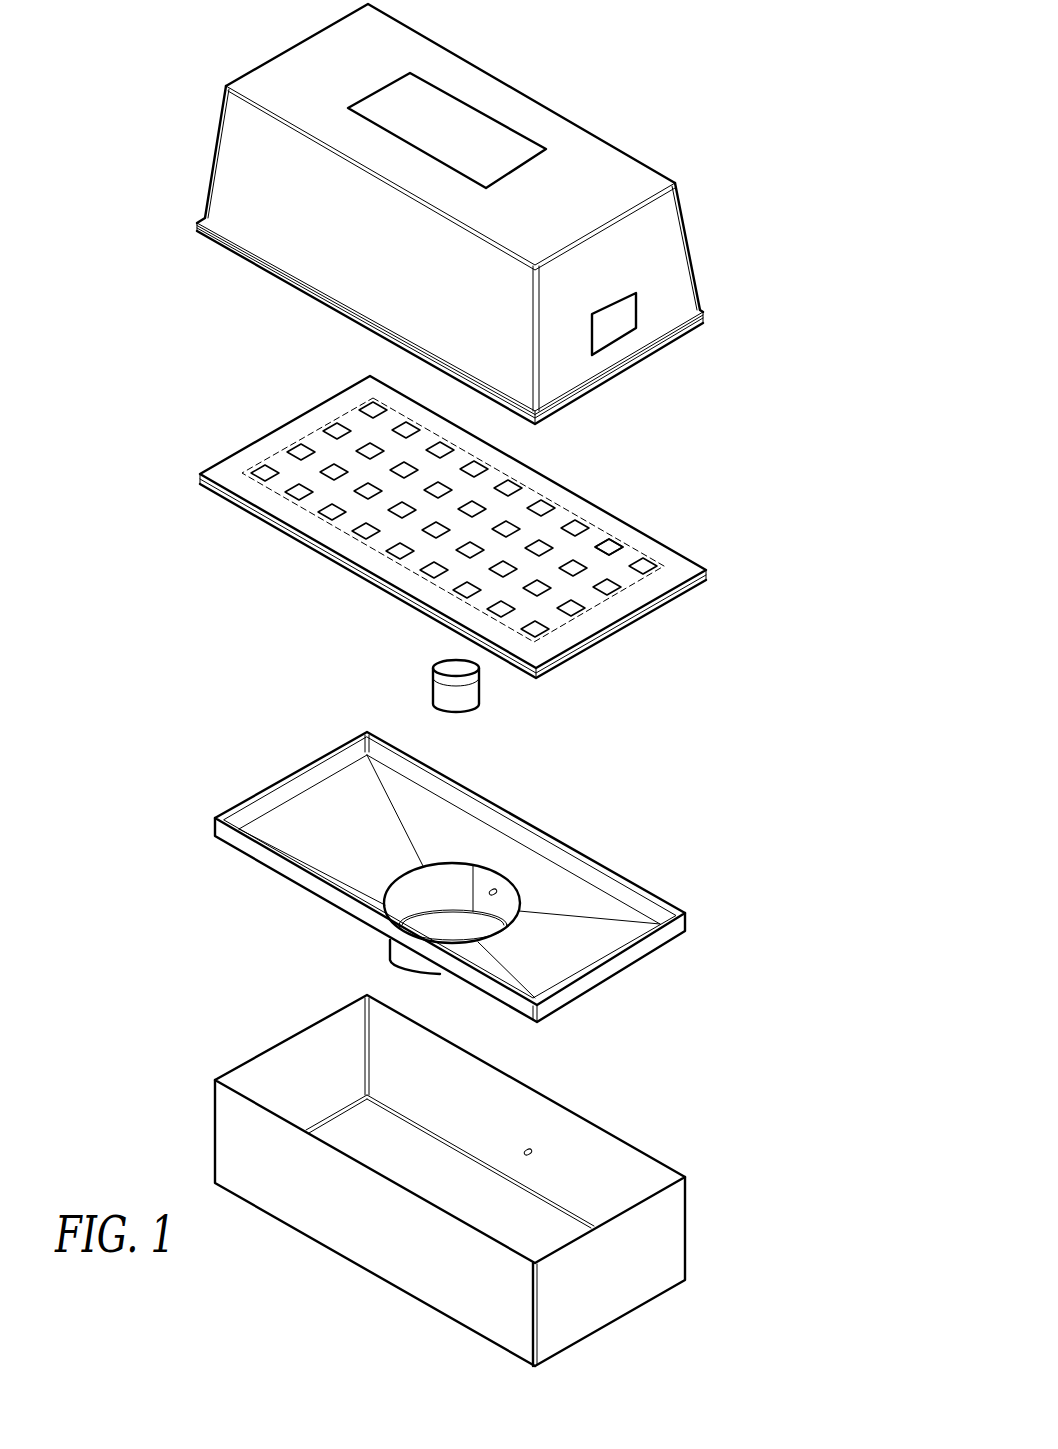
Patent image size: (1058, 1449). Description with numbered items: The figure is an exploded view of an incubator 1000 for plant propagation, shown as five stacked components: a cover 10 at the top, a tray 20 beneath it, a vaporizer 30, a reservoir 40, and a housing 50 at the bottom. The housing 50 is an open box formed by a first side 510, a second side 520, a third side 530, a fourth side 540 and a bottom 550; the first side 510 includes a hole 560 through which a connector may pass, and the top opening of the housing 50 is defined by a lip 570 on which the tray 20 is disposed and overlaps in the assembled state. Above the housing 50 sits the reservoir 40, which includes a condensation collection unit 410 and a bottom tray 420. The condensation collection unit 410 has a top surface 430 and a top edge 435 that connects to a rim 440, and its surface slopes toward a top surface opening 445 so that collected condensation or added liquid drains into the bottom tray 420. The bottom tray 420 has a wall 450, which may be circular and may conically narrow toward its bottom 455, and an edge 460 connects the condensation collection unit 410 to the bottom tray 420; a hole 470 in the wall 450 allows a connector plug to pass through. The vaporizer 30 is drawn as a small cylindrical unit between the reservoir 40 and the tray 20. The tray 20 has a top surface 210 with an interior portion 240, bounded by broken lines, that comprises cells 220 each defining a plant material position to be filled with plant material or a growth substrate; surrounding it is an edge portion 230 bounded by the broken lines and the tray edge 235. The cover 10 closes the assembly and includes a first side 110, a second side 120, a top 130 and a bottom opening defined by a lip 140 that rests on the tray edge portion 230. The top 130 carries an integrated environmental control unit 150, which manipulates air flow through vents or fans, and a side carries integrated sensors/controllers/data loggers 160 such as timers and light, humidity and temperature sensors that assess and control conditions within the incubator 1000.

The incubator 1000 is at (162, 15).
The cover 10 is at (469, 214).
The first side 110 is at (665, 233).
The second side 120 is at (243, 163).
The top 130 is at (588, 168).
The lip 140 is at (253, 257).
The environmental control unit 150 is at (455, 128).
The sensors/controllers/data loggers 160 is at (625, 323).
The tray 20 is at (500, 527).
The top surface 210 is at (256, 458).
The cell 220 is at (542, 509).
The edge portion 230 is at (579, 627).
The edge 235 is at (298, 526).
The interior portion 240 is at (550, 576).
The vaporizer 30 is at (491, 690).
The reservoir 40 is at (440, 884).
The condensation collection unit 410 is at (247, 858).
The bottom tray 420 is at (388, 950).
The top surface 430 is at (598, 915).
The top edge 435 is at (443, 795).
The rim 440 is at (560, 850).
The top surface opening 445 is at (510, 932).
The wall 450 is at (422, 893).
The bottom 455 is at (538, 1002).
The edge 460 is at (463, 930).
The hole 470 is at (498, 891).
The housing 50 is at (494, 1180).
The first side 510 is at (618, 1168).
The second side 520 is at (642, 1270).
The third side 530 is at (352, 1237).
The fourth side 540 is at (297, 1055).
The bottom 550 is at (522, 1222).
The hole 560 is at (533, 1147).
The lip 570 is at (507, 1077).